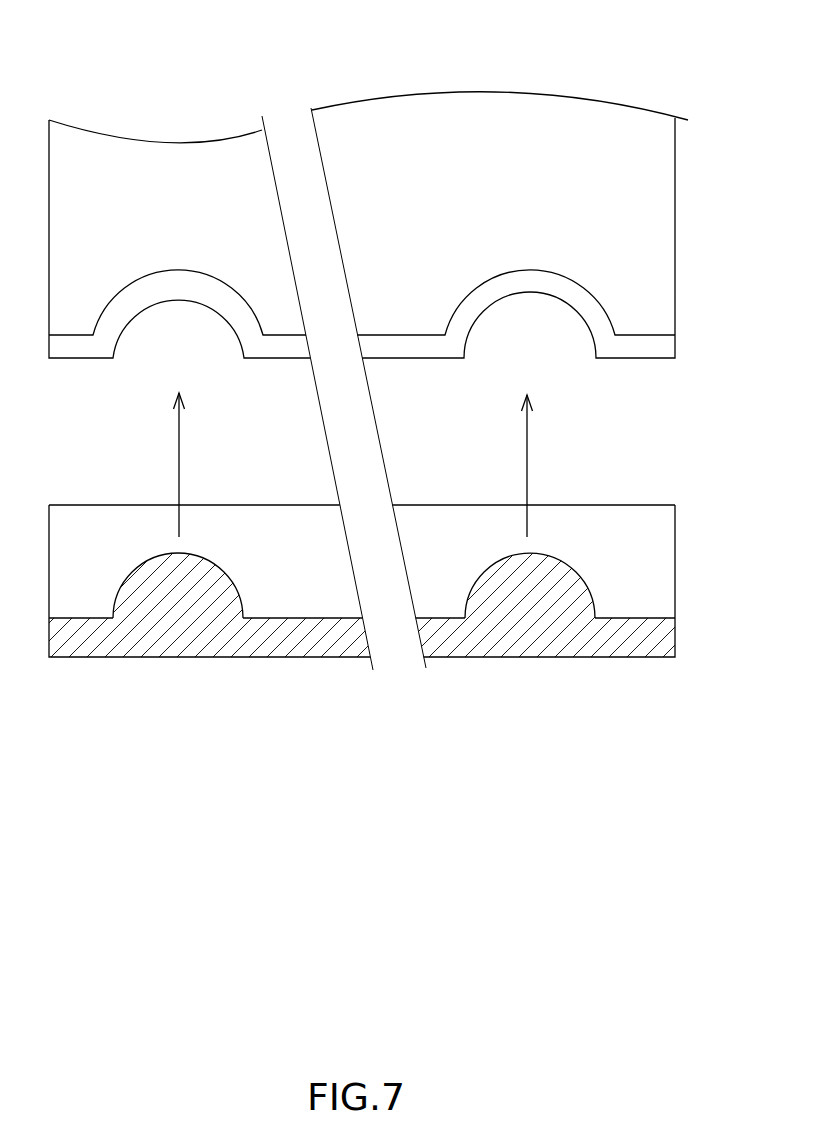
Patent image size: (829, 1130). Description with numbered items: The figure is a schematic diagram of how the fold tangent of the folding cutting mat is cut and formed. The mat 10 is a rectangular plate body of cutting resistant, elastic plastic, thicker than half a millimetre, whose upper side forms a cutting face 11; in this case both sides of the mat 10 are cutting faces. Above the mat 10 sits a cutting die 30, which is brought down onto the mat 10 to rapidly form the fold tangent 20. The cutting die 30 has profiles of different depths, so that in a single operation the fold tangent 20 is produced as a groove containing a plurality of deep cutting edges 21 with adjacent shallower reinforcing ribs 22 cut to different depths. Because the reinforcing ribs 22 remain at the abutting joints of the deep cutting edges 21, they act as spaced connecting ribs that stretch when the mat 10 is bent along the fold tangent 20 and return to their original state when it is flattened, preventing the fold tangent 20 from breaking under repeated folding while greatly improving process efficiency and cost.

The mat 10 is at (646, 661).
The cutting face 11 is at (102, 505).
The fold tangent 20 is at (399, 537).
The deep cutting edge 21 is at (625, 618).
The reinforcing rib 22 is at (187, 553).
The cutting die 30 is at (553, 180).